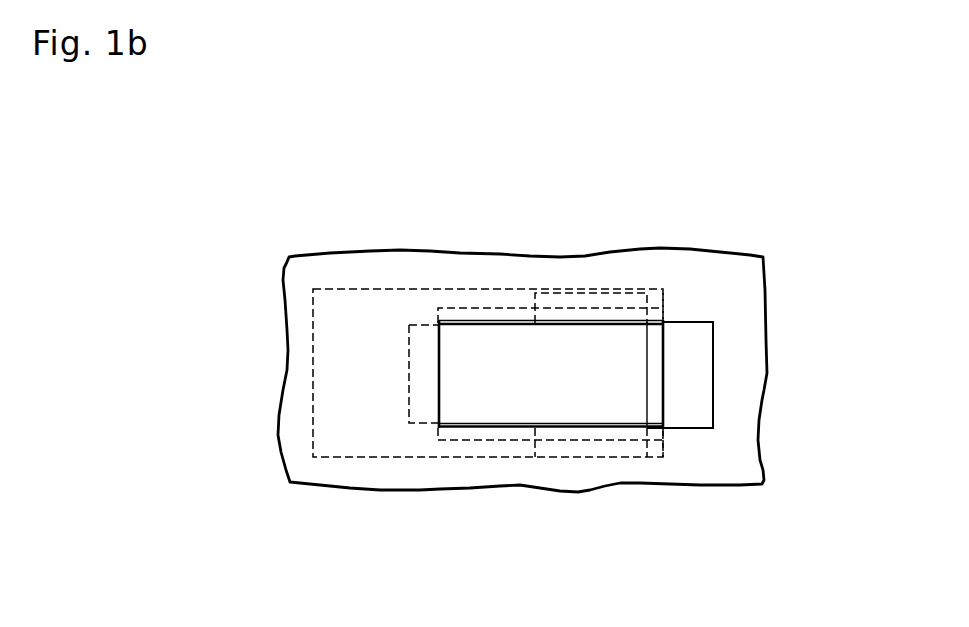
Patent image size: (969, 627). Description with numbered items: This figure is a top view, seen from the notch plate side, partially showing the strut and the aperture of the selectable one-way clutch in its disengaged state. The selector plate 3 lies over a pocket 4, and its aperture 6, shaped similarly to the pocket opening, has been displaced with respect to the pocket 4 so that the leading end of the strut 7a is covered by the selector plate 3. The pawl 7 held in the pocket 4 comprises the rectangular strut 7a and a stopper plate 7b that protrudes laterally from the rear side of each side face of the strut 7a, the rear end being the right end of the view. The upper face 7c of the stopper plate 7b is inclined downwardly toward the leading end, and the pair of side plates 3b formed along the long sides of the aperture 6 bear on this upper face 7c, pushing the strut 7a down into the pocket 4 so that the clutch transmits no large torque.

The selector plate 3 is at (692, 270).
The side plate 3b is at (438, 312).
The pocket 4 is at (388, 297).
The aperture 6 is at (713, 388).
The pawl 7 is at (487, 424).
The strut 7a is at (570, 398).
The stopper plate 7b is at (535, 437).
The upper face of stopper plate 7c is at (619, 445).